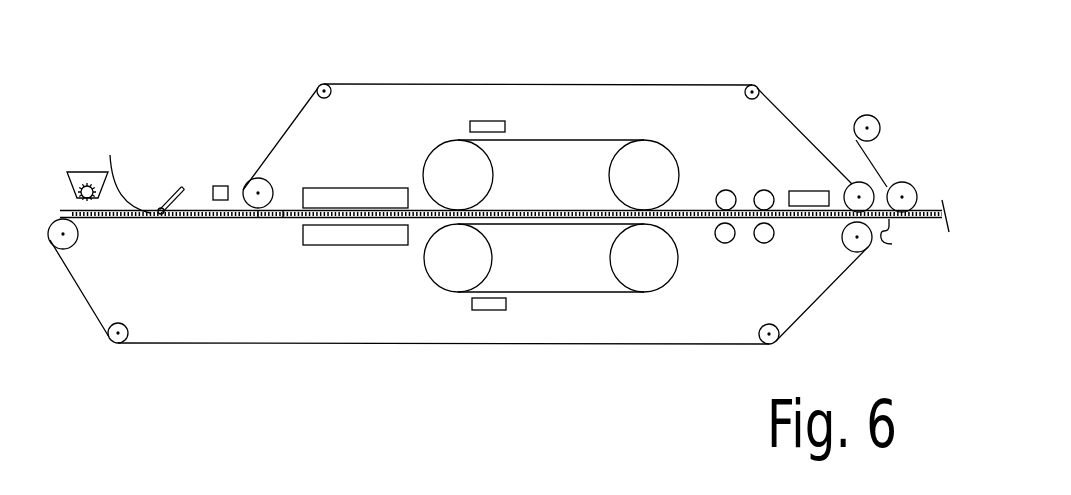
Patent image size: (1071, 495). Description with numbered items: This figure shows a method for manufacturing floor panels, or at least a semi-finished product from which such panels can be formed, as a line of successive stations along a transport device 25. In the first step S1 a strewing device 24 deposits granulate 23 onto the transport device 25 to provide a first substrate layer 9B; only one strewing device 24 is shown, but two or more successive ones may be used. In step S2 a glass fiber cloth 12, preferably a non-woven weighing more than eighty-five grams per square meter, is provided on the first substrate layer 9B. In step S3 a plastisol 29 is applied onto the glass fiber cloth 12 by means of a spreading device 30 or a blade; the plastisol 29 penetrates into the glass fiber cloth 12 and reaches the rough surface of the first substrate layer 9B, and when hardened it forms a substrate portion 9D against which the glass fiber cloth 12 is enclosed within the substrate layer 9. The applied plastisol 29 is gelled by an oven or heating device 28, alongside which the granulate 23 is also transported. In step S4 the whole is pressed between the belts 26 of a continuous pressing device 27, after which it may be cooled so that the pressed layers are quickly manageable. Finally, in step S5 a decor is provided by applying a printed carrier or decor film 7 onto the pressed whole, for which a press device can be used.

The decor film 7 is at (873, 163).
The substrate layer 9 is at (894, 243).
The first substrate layer 9B is at (283, 218).
The substrate portion 9D is at (260, 218).
The glass fiber cloth 12 is at (131, 178).
The granulate 23 is at (170, 218).
The strewing device 24 is at (82, 166).
The transport device 25 is at (127, 218).
The belts 26 is at (561, 210).
The continuous pressing device 27 is at (600, 130).
The heating device 28 is at (221, 186).
The plastisol 29 is at (233, 210).
The spreading device 30 is at (162, 208).
The step S1 is at (98, 166).
The step S2 is at (125, 188).
The step S3 is at (187, 178).
The step S4 is at (445, 128).
The step S5 is at (857, 113).